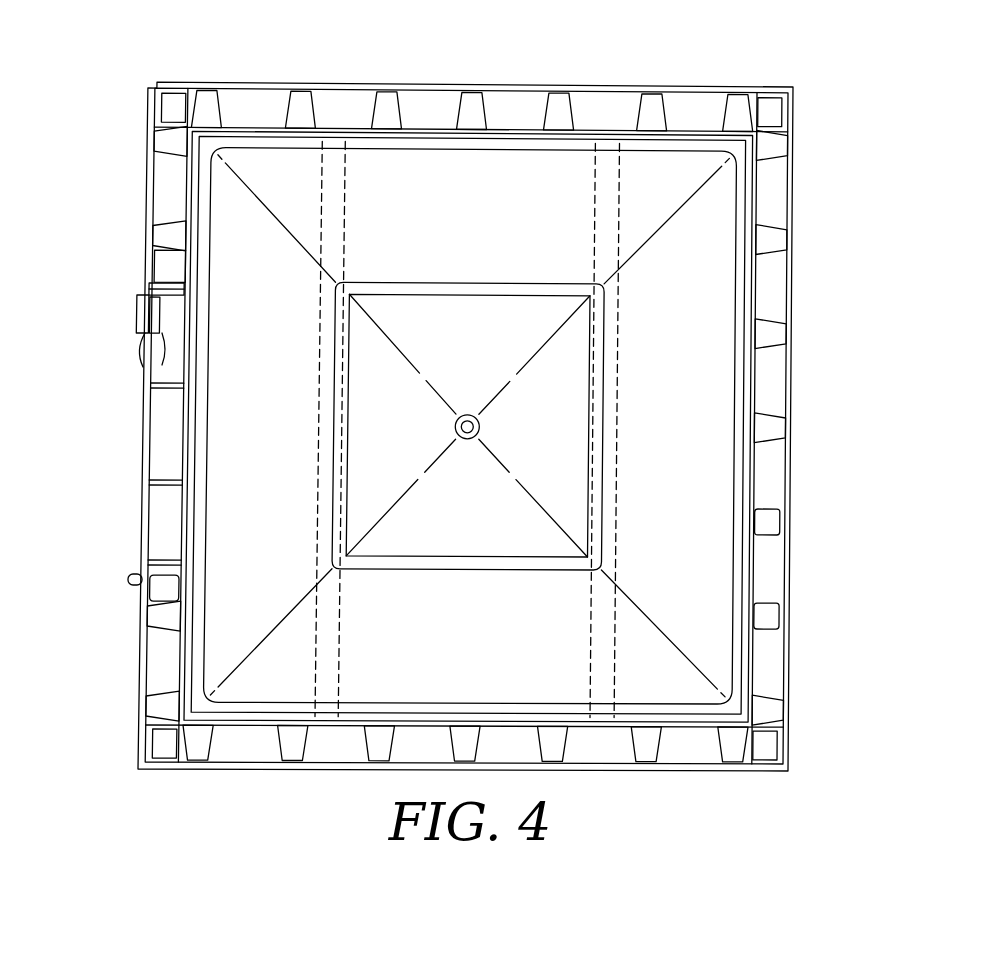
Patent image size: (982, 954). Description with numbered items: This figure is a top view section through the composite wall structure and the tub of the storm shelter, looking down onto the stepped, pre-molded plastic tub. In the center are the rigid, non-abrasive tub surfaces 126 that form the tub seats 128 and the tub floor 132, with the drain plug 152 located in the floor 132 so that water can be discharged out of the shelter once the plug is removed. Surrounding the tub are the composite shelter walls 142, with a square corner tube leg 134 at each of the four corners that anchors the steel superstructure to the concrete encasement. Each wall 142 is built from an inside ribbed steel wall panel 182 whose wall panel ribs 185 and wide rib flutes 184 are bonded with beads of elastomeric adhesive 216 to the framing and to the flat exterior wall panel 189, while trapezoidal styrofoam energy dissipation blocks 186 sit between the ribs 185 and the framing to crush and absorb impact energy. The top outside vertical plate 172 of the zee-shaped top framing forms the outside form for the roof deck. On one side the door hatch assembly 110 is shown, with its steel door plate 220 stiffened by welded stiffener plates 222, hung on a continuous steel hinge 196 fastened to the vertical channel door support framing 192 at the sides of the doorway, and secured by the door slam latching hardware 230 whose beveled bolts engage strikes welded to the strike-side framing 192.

The door hatch assembly 110 is at (145, 400).
The tub surfaces 126 is at (385, 288).
The tub seats 128 is at (419, 173).
The tub floor 132 is at (476, 334).
The corner tube legs 134 is at (778, 745).
The shelter walls 142 is at (790, 404).
The plug 152 is at (474, 417).
The top outside vertical plate 172 is at (752, 375).
The ribbed steel wall panels 182 is at (792, 441).
The inside wall panel rib flutes 184 is at (752, 484).
The wall panel ribs 185 is at (790, 239).
The styrofoam energy dissipation blocks 186 is at (779, 528).
The exterior wall panel 189 is at (790, 570).
The door support framing 192 is at (170, 278).
The continuous steel hinge 196 is at (128, 580).
The elastomeric bonding adhesive 216 is at (774, 648).
The steel door plate 220 is at (148, 456).
The steel stiffener plates 222 is at (147, 512).
The door slam latching hardware 230 is at (137, 311).